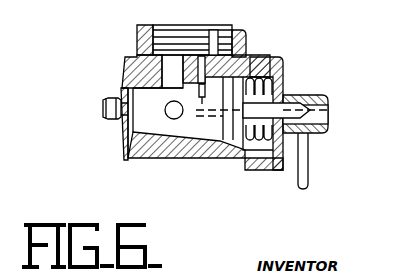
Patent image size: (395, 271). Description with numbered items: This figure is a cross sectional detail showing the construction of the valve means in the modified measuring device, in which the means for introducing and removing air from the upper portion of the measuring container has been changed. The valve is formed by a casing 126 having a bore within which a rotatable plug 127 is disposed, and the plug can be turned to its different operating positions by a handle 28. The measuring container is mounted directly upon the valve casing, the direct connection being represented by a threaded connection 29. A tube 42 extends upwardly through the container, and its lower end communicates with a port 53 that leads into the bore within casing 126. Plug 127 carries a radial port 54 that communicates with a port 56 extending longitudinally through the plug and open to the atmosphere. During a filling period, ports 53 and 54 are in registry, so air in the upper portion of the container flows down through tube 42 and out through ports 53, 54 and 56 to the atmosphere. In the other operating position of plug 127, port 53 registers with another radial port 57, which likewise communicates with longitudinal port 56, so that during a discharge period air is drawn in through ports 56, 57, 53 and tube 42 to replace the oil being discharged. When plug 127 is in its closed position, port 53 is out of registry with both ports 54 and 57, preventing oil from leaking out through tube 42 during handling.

The threaded connection 29 is at (140, 27).
The casing 126 is at (148, 58).
The tube 42 is at (210, 44).
The radial port 54 is at (248, 54).
The port 53 is at (182, 88).
The radial port 57 is at (223, 116).
The plug 127 is at (178, 128).
The port 56 is at (221, 158).
The handle 28 is at (308, 171).